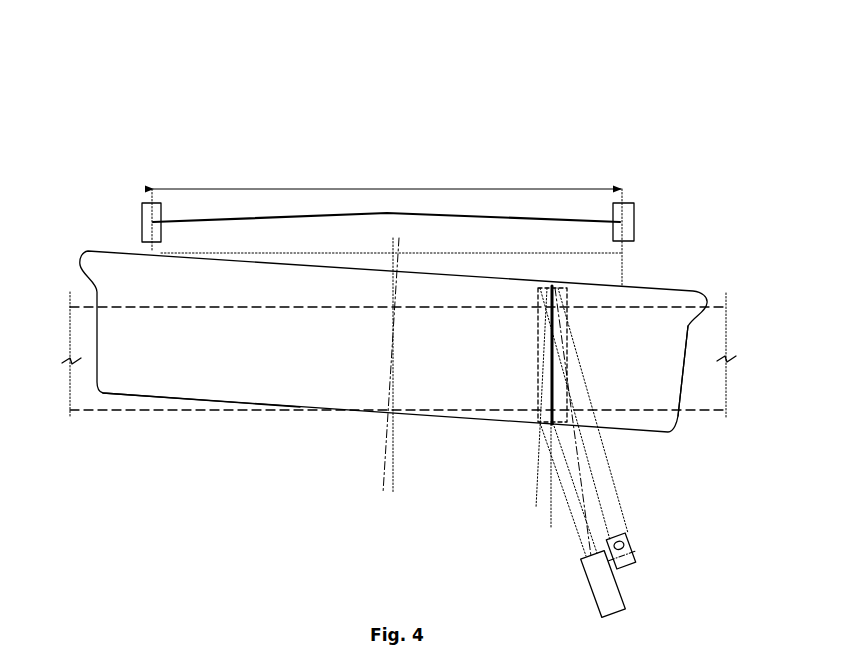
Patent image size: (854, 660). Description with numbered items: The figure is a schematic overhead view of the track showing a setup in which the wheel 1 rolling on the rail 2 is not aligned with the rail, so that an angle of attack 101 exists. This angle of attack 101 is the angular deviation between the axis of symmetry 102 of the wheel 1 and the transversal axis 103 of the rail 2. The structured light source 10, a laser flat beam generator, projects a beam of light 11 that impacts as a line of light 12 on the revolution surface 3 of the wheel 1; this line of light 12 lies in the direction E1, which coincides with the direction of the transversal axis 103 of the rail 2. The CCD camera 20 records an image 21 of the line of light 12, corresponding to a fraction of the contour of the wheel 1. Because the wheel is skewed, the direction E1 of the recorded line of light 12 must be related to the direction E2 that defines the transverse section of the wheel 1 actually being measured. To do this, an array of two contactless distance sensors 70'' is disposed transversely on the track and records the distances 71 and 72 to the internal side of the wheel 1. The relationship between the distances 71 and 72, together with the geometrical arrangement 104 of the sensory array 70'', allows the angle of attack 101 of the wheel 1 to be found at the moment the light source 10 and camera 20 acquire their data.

The wheel 1 is at (105, 302).
The rail 2 is at (87, 388).
The revolution surface 3 is at (682, 372).
The structured light source 10 is at (608, 598).
The beam of light 11 is at (583, 517).
The line of light 12 is at (550, 388).
The CCD camera 20 is at (633, 557).
The image 21 is at (537, 296).
The array of two contactless distance sensors 70'' is at (386, 207).
The distance 71 is at (150, 247).
The distance 72 is at (627, 272).
The angle of attack 101 is at (297, 222).
The axis of symmetry 102 is at (383, 482).
The transversal axis 103 is at (395, 482).
The geometrical arrangement 104 is at (387, 226).
The direction E1 is at (550, 518).
The direction E2 is at (538, 497).